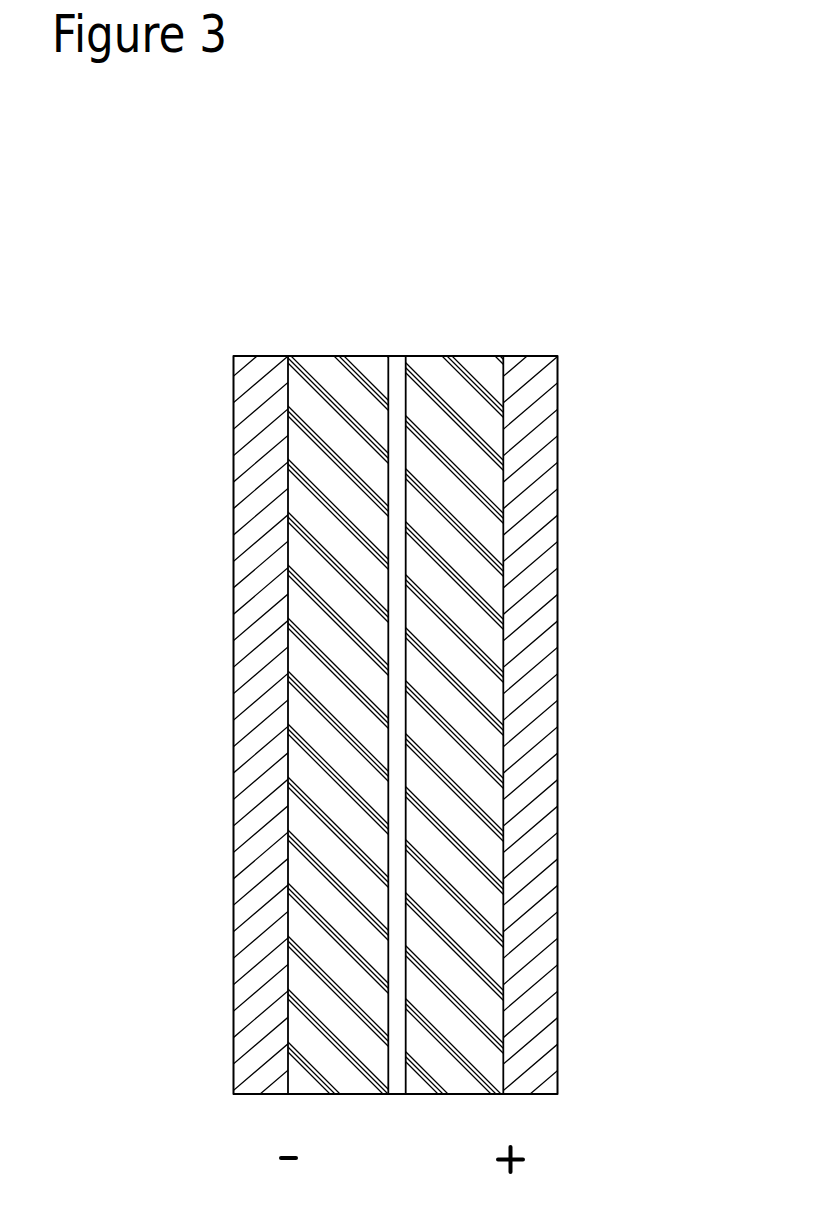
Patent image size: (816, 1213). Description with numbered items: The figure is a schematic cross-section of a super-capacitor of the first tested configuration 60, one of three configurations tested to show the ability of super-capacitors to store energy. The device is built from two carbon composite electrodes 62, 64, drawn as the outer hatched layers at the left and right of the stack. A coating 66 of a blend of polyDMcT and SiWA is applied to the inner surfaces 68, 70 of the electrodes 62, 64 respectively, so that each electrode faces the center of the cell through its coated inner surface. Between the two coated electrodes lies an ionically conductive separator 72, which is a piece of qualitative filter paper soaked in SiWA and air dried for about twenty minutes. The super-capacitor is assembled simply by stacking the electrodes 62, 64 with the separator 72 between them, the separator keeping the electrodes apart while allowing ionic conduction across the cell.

The Type 1 configuration 60 is at (545, 235).
The carbon composite electrode 62 is at (260, 355).
The carbon composite electrode 64 is at (535, 355).
The coating 66 is at (415, 708).
The inner surface 68 is at (288, 653).
The inner surface 70 is at (503, 648).
The ionically conductive separator 72 is at (398, 356).